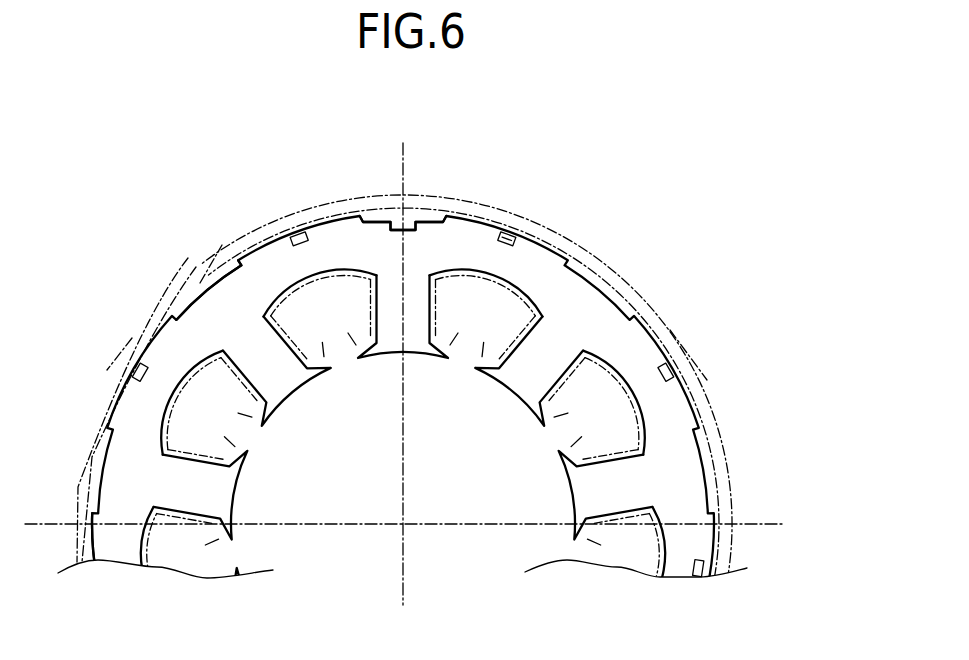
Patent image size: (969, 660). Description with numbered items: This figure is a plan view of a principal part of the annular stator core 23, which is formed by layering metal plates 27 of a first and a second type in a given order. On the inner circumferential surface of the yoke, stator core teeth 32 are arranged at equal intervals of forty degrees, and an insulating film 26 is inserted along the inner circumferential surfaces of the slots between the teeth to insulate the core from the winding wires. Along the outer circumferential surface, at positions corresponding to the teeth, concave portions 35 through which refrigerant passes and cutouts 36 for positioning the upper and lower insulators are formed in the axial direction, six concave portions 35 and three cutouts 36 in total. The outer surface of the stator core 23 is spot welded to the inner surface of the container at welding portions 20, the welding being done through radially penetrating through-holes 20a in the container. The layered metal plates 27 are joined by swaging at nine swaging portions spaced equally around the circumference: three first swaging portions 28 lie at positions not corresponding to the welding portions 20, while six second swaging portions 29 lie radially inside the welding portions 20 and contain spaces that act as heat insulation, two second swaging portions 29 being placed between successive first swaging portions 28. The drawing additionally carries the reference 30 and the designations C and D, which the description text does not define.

The stator core 23 is at (684, 132).
The core back (yoke) 30 is at (679, 404).
The cutouts 36 is at (398, 215).
The concave portions 35 is at (233, 268).
The metal plates 27 is at (118, 548).
The stator core teeth 32 is at (538, 362).
The insulating film 26 is at (372, 312).
The welding portions 20 is at (307, 202).
The through-holes 20a is at (266, 221).
The first swaging portions 28 is at (510, 232).
The second swaging portions 29 is at (317, 226).
The joint position C is at (434, 207).
The displacement direction D is at (186, 278).